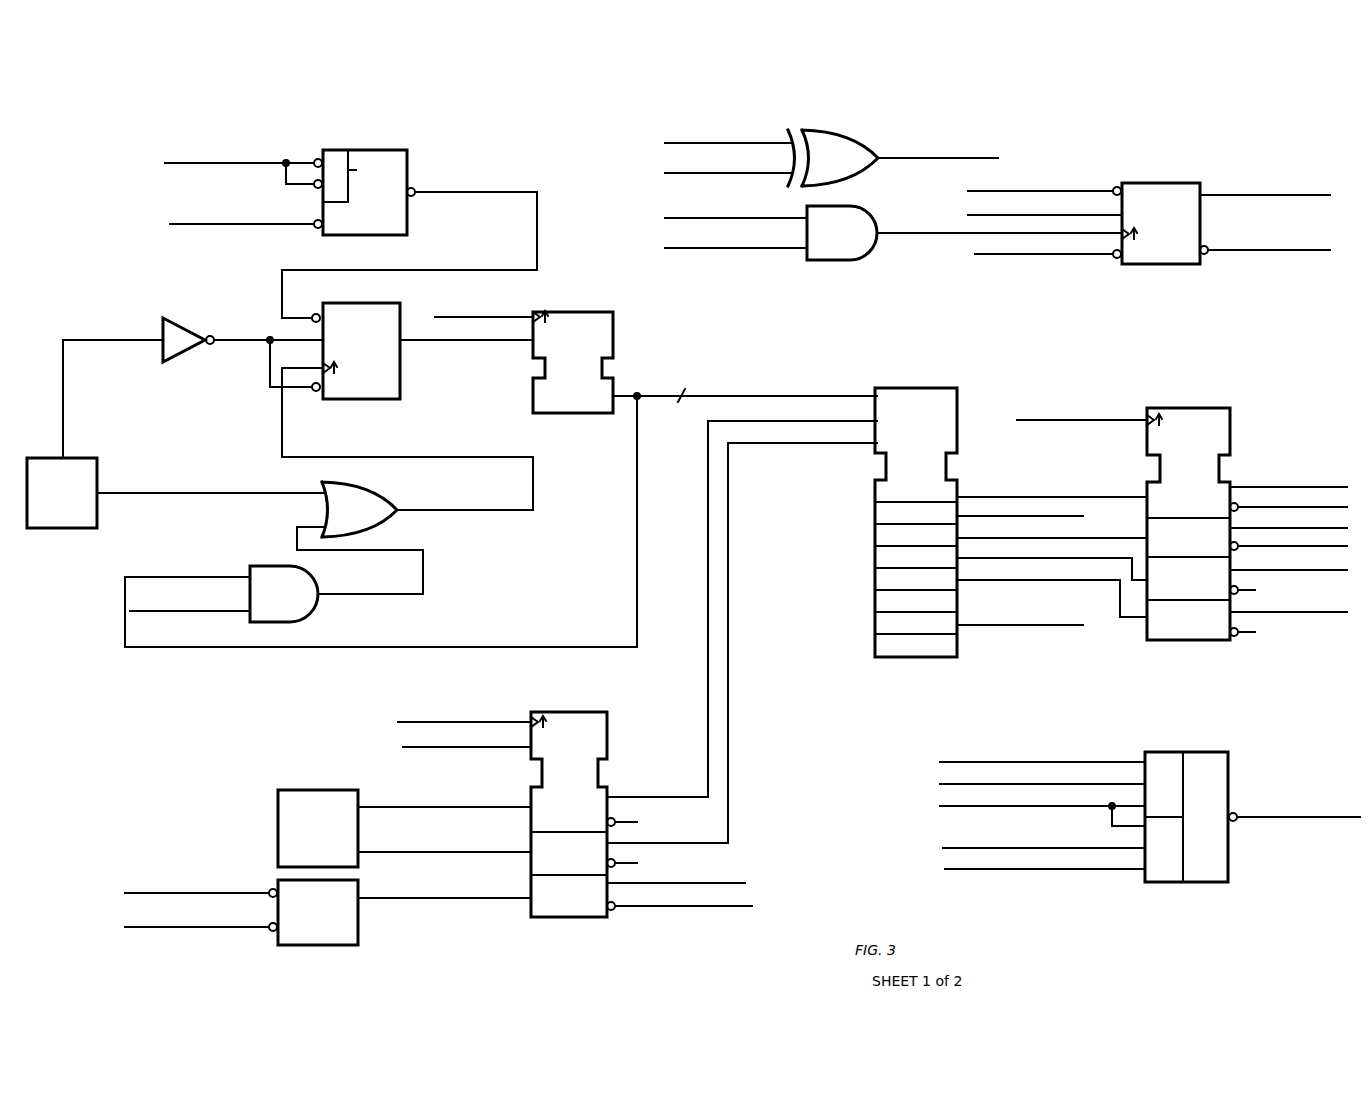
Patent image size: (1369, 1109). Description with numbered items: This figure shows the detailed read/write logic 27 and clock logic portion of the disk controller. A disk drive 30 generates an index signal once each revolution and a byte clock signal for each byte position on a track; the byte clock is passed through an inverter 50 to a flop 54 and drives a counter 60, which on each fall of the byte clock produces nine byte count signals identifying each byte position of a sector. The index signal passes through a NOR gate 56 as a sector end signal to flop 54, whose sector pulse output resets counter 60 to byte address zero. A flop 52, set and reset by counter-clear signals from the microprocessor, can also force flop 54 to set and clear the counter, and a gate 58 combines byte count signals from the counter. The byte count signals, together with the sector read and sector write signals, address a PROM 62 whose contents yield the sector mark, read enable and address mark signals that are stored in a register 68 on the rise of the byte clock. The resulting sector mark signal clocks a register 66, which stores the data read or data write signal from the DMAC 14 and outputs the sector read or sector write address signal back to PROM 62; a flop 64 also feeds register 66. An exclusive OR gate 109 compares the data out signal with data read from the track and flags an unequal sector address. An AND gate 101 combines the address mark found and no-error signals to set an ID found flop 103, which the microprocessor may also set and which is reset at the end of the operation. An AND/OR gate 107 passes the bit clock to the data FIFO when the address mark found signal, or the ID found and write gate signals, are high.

The DMAC 14 is at (312, 790).
The read/write logic 27 is at (1060, 911).
The disk drive 30 is at (78, 458).
The inverter 50 is at (175, 318).
The flop 52 is at (392, 150).
The flop 54 is at (370, 303).
The NOR gate 56 is at (368, 484).
The AND gate 58 is at (262, 566).
The counter 60 is at (580, 312).
The programmable read only memory (PROM) 62 is at (922, 388).
The flip-flop 64 is at (335, 945).
The register 66 is at (578, 712).
The register 68 is at (1197, 408).
The AND gate 101 is at (862, 210).
The ID found flop 103 is at (1178, 183).
The AND/OR gate 107 is at (1205, 752).
The exclusive OR gate 109 is at (860, 140).